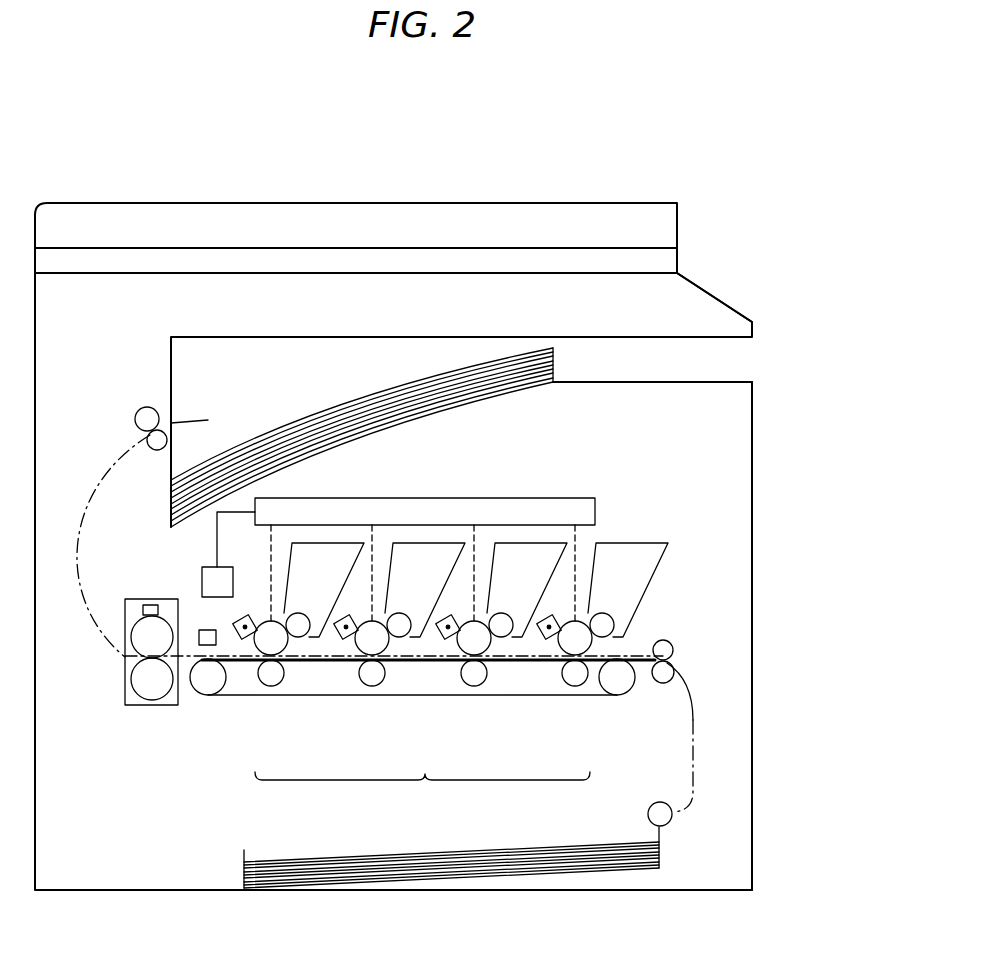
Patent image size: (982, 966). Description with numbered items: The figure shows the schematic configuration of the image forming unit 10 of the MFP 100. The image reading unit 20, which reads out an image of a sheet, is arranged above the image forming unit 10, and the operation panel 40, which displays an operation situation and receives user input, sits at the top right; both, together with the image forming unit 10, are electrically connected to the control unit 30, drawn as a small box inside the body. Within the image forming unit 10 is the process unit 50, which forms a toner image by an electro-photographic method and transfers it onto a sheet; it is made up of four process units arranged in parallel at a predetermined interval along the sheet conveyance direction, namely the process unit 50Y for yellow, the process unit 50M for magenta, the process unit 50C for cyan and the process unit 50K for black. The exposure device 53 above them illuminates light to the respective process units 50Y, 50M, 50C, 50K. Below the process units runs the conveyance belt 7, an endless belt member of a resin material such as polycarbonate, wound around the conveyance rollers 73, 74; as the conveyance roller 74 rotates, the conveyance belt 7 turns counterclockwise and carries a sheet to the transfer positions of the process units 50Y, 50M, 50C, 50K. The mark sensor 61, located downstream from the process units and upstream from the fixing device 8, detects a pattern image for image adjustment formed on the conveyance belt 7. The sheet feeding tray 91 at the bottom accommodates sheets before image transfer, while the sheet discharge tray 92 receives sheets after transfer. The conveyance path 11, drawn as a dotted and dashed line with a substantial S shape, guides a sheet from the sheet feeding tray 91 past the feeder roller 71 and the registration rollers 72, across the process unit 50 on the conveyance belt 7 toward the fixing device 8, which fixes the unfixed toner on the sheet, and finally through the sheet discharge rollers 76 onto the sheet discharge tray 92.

The MFP 100 is at (592, 182).
The image reading unit 20 is at (142, 203).
The operation panel 40 is at (722, 297).
The image forming unit 10 is at (698, 443).
The sheet discharge tray 92 is at (350, 425).
The sheet discharge rollers 76 is at (147, 407).
The exposure device 53 is at (535, 497).
The control unit 30 is at (202, 572).
The mark sensor 61 is at (200, 630).
The fixing device 8 is at (152, 705).
The conveyance belt 7 is at (243, 695).
The conveyance roller 74 is at (206, 691).
The conveyance roller 73 is at (619, 691).
The process unit 50Y is at (293, 698).
The process unit 50M is at (378, 698).
The process unit 50C is at (477, 698).
The process unit 50K is at (565, 698).
The process unit 50 is at (422, 792).
The registration rollers 72 is at (668, 641).
The conveyance path 11 is at (697, 722).
The feeder roller 71 is at (648, 814).
The sheet feeding tray 91 is at (480, 864).